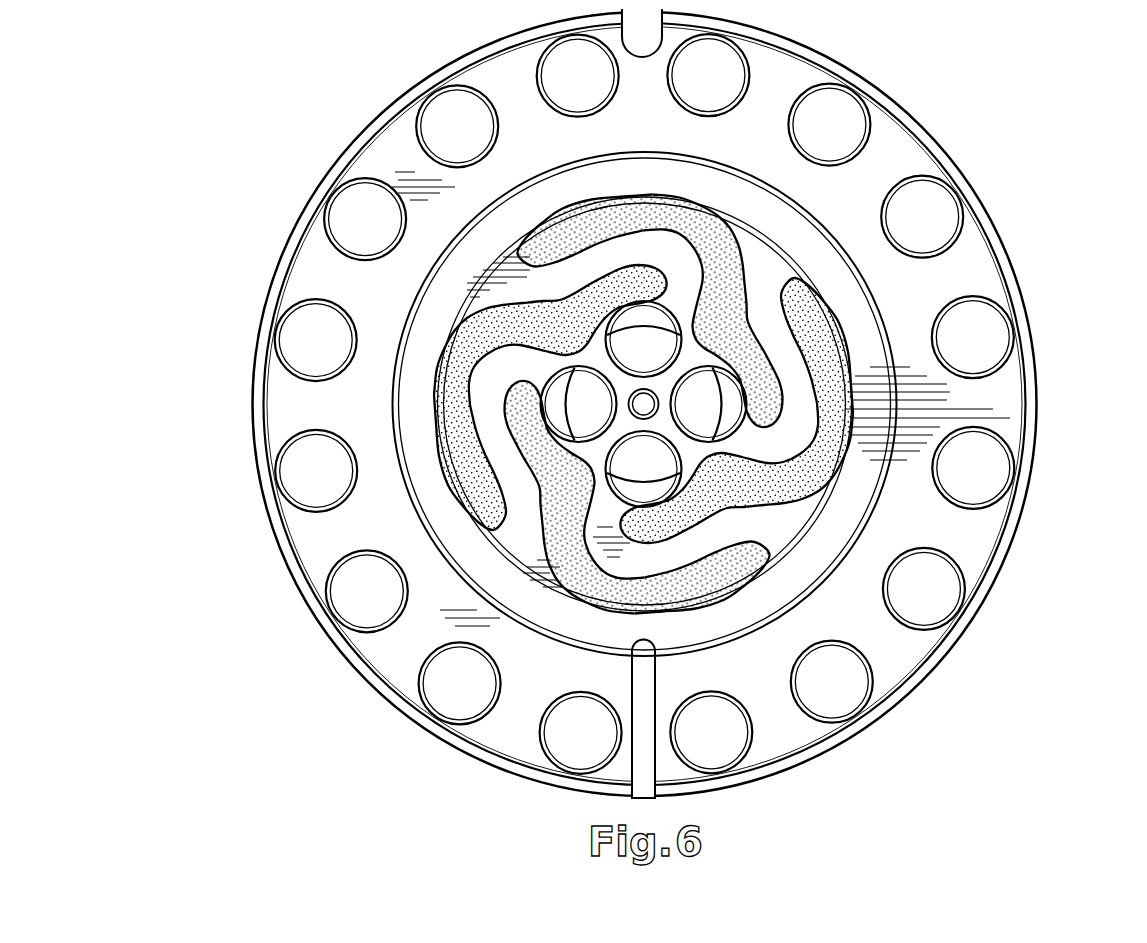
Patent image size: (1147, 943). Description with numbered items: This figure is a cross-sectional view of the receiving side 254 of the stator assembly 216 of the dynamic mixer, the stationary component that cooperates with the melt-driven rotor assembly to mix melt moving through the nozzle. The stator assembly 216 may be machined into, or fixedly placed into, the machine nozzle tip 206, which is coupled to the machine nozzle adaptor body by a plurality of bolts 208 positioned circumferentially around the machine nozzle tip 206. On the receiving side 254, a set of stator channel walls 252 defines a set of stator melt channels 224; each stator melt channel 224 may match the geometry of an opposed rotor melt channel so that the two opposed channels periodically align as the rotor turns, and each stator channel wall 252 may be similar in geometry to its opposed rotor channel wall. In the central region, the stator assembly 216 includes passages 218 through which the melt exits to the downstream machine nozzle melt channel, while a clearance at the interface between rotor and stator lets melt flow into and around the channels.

The machine nozzle tip 206 is at (271, 259).
The bolt 208 is at (302, 327).
The stator assembly 216 is at (739, 187).
The passages 218 is at (553, 413).
The stator melt channel 224 is at (487, 403).
The stator channel wall 252 is at (716, 291).
The receiving side 254 is at (1073, 295).